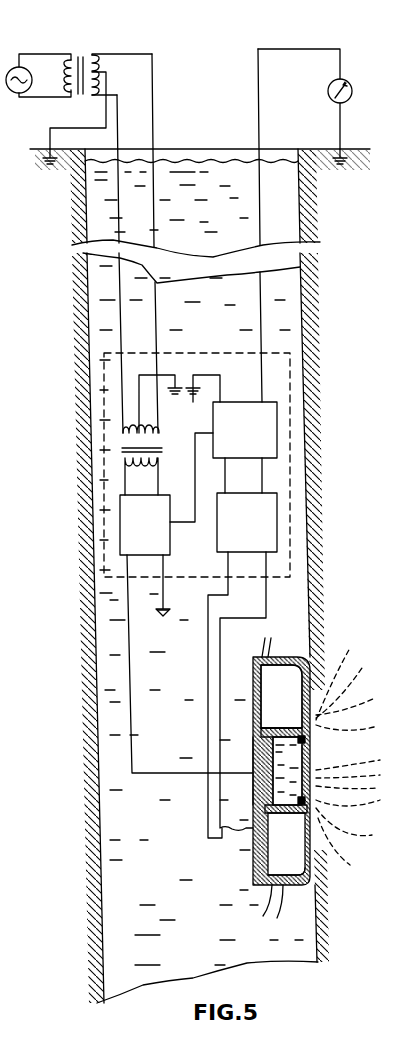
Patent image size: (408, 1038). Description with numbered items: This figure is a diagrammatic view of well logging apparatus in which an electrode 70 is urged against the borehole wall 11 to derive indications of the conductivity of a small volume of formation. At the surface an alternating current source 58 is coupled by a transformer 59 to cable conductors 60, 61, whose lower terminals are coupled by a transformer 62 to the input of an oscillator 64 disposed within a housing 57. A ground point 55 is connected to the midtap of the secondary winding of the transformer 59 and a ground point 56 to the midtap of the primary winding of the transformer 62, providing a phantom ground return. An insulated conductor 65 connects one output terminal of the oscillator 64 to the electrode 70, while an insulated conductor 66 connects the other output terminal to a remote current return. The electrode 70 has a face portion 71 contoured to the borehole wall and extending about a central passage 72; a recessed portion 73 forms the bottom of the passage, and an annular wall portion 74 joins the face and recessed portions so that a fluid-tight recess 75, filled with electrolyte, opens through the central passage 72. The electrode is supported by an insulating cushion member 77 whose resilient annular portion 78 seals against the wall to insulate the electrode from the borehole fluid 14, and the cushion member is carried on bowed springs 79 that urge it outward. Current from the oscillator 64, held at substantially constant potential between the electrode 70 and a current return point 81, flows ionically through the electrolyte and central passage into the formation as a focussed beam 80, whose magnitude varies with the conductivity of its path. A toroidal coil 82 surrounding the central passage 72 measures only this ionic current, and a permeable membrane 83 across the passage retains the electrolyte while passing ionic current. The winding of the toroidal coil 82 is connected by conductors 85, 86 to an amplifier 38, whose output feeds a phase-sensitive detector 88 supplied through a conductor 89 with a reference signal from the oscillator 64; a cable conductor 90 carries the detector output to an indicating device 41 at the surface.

The well casing 11 is at (90, 337).
The borehole fluid 14 is at (182, 894).
The amplifier 38 is at (217, 512).
The indicating device 41 is at (352, 95).
The ground point 55 is at (50, 168).
The ground point 56 is at (196, 396).
The housing 57 is at (294, 447).
The alternating current source 58 is at (10, 100).
The transformer 59 is at (84, 56).
The cable conductor 60 is at (121, 225).
The cable conductor 61 is at (159, 232).
The transformer 62 is at (161, 450).
The oscillator 64 is at (170, 548).
The insulated conductor 65 is at (132, 713).
The insulated conductor 66 is at (165, 592).
The electrode 70 is at (318, 835).
The face portion 71 is at (302, 700).
The central passage 72 is at (310, 760).
The recessed portion 73 is at (258, 753).
The annular wall portion 74 is at (289, 729).
The recess 75 is at (298, 764).
The insulating cushion member 77 is at (273, 908).
The resilient annular portion 78 is at (316, 868).
The bowed springs 79 is at (271, 650).
The focussed beam 80 is at (359, 770).
The current return point 81 is at (168, 617).
The toroidal coil 82 is at (313, 792).
The permeable membrane 83 is at (307, 800).
The conductor 85 is at (208, 705).
The conductor 86 is at (220, 650).
The phase-sensitive detector 88 is at (231, 401).
The conductor 89 is at (195, 482).
The cable conductor 90 is at (261, 218).